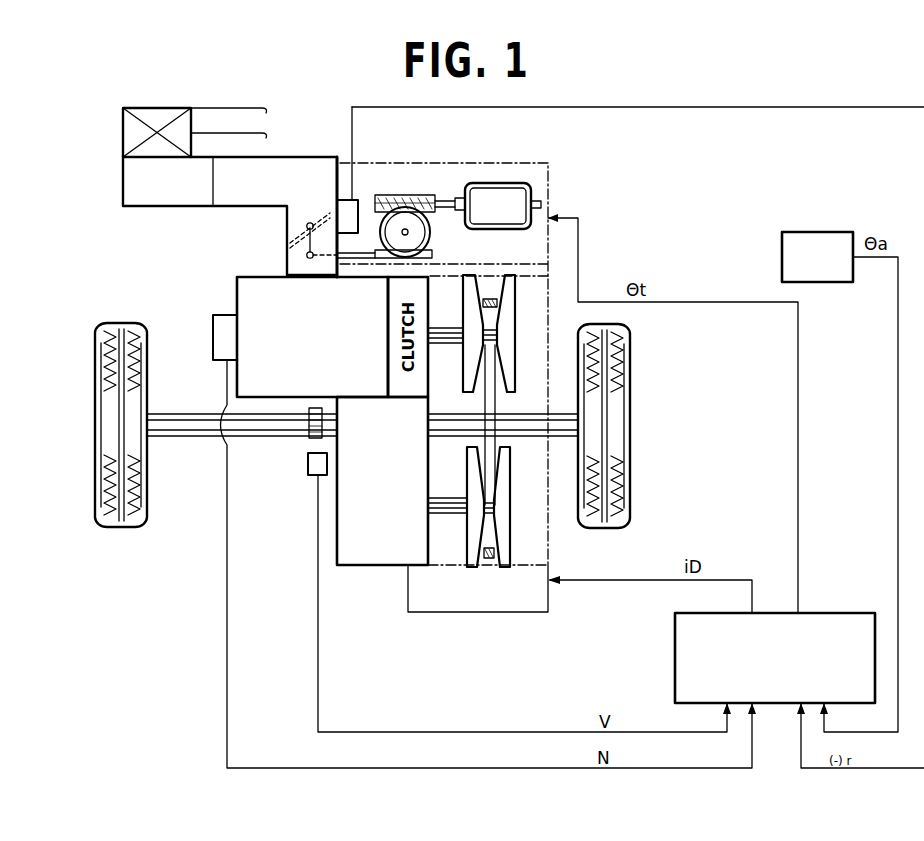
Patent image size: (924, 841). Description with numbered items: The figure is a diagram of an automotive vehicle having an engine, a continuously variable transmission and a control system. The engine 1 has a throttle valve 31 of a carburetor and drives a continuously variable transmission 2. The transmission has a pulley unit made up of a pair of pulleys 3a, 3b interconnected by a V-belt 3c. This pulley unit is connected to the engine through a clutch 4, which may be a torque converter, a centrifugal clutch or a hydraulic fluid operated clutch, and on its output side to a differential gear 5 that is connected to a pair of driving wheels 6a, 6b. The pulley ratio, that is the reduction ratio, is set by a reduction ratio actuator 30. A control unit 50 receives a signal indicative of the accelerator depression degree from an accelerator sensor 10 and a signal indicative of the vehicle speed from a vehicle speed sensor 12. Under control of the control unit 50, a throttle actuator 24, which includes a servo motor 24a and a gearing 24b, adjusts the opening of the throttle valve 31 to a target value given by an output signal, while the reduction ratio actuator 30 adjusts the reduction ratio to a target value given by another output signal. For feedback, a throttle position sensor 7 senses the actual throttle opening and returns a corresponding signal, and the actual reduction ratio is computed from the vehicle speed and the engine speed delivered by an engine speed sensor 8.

The engine 1 is at (237, 291).
The continuously variable transmission 2 is at (528, 423).
The pulley 3a is at (516, 330).
The pulley 3b is at (510, 500).
The V-belt 3c is at (497, 409).
The clutch 4 is at (431, 362).
The differential gear 5 is at (376, 566).
The driving wheel 6a is at (147, 480).
The driving wheel 6b is at (630, 478).
The throttle position sensor 7 is at (346, 202).
The engine speed sensor 8 is at (219, 341).
The accelerator sensor 10 is at (818, 232).
The vehicle speed sensor 12 is at (307, 471).
The throttle actuator 24 is at (453, 346).
The servo motor 24a is at (519, 218).
The gearing 24b is at (407, 195).
The reduction ratio actuator 30 is at (496, 606).
The throttle valve 31 is at (300, 232).
The control unit 50 is at (829, 613).